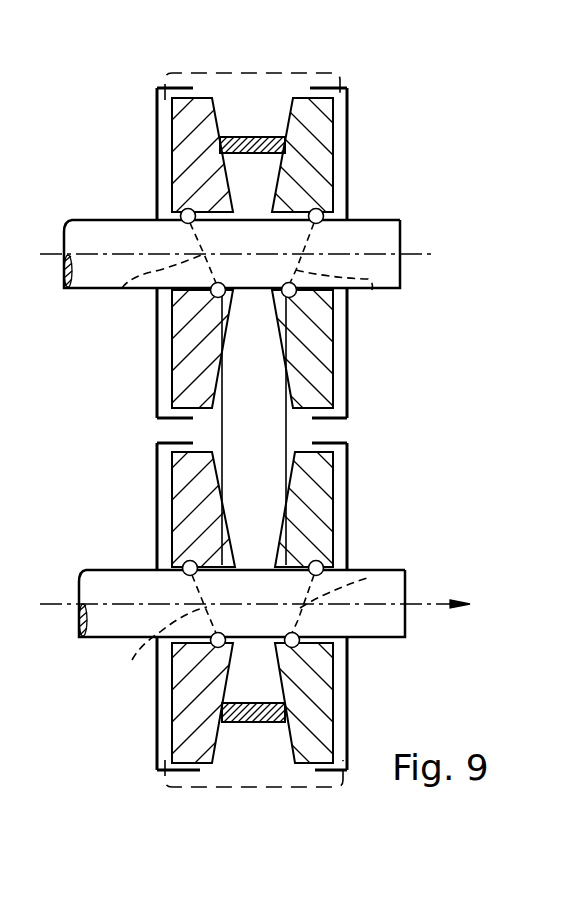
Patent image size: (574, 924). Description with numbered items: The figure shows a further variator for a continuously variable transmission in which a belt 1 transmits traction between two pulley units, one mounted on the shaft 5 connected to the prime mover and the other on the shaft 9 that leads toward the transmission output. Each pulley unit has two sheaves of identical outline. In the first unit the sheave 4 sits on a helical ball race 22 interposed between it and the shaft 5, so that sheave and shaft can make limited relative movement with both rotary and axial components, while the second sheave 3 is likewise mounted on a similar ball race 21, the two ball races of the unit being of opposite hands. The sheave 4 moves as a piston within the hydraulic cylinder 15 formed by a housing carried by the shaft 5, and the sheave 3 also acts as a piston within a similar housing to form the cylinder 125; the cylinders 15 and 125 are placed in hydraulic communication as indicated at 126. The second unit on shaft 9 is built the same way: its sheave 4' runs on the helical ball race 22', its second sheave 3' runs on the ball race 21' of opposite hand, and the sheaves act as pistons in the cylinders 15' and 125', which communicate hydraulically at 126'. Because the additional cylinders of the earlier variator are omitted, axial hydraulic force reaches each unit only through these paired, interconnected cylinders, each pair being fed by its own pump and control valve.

The belt 1 is at (248, 137).
The second sheave 3 is at (196, 253).
The sheave 4 is at (305, 253).
The shaft 5 is at (90, 220).
The shaft 9 is at (100, 574).
The hydraulic cylinder 15 is at (349, 253).
The ball race 21 is at (167, 267).
The helical ball-race mounting 22 is at (336, 267).
The cylinder 125 is at (146, 253).
The hydraulic communication 126 is at (254, 72).
The second sheave 3' is at (313, 604).
The sheave 4' is at (191, 605).
The hydraulic cylinder 15' is at (153, 606).
The ball race 21' is at (340, 588).
The helical ball race 22' is at (159, 621).
The cylinder 125' is at (368, 606).
The hydraulic communication 126' is at (254, 762).